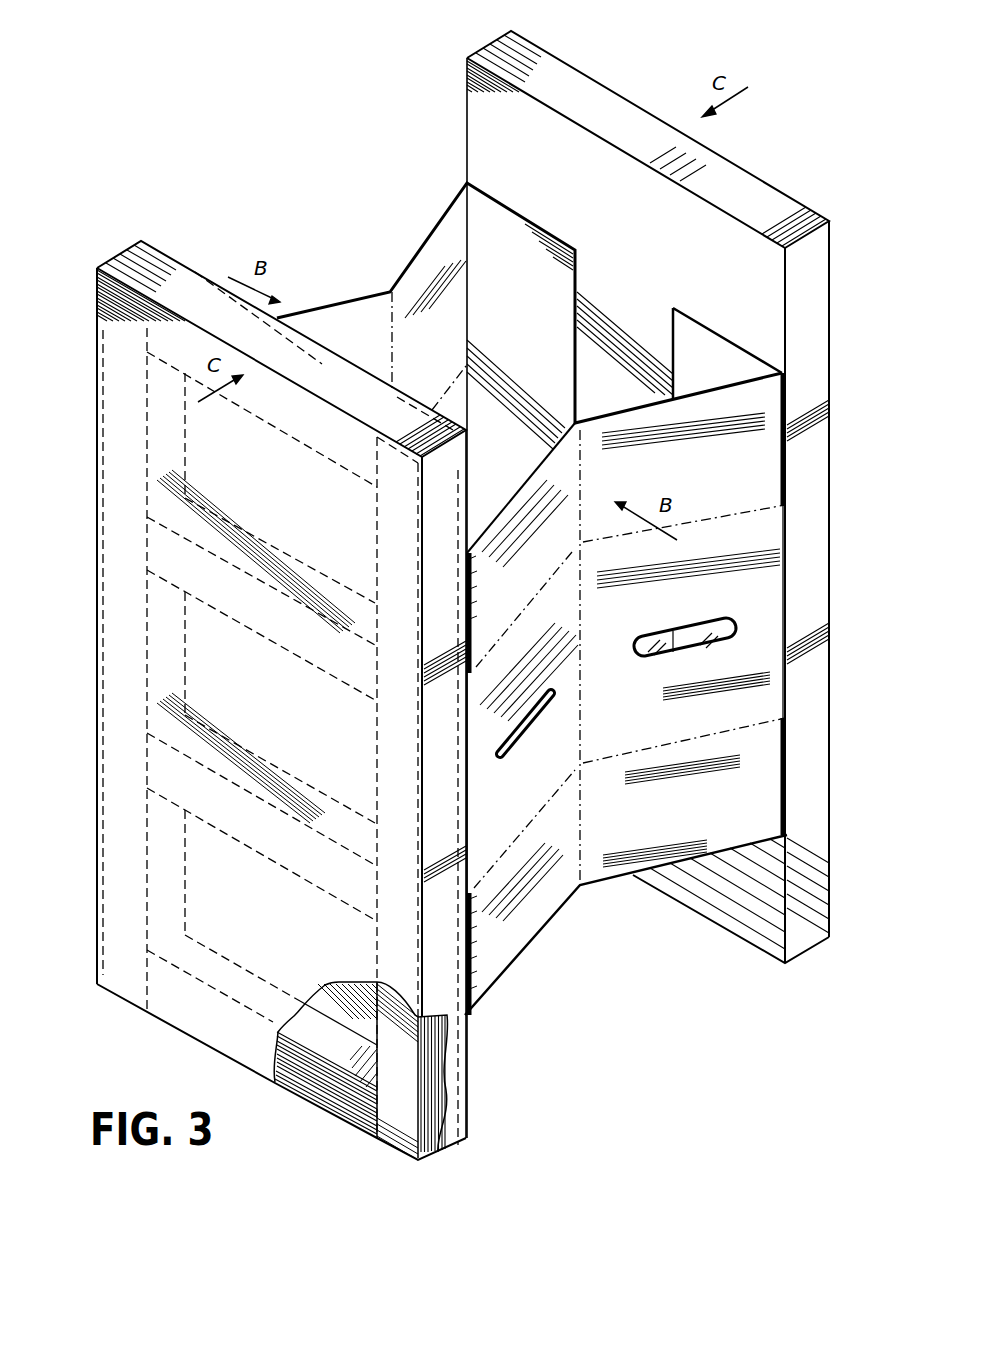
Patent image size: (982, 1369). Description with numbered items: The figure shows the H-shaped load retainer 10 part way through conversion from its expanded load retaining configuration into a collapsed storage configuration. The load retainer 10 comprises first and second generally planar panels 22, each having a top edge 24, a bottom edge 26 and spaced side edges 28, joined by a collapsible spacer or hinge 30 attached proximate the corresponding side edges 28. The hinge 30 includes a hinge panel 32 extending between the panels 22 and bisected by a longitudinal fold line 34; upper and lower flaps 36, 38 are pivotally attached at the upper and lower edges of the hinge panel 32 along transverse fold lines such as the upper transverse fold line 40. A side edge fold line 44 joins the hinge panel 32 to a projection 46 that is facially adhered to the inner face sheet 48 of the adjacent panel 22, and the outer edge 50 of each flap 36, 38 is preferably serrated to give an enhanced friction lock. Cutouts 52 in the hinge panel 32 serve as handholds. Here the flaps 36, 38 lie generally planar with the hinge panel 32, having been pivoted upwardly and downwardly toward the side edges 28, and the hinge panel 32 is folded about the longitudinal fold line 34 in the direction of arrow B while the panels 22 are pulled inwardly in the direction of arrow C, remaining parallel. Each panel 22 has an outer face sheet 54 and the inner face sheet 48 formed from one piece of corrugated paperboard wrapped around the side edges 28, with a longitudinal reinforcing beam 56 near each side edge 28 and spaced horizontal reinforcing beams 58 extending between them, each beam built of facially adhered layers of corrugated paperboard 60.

The load retainer 10 is at (277, 1147).
The panel 22 is at (612, 88).
The top edge 24 is at (463, 244).
The bottom edge 26 is at (207, 1047).
The side edge 28 is at (482, 50).
The collapsible hinge 30 is at (421, 249).
The hinge panel 32 is at (468, 405).
The longitudinal fold line 34 is at (400, 350).
The upper flap 36 is at (365, 296).
The lower flap 38 is at (611, 838).
The upper transverse fold line 40 is at (465, 372).
The side edge fold line 44 is at (467, 387).
The projection 46 is at (604, 336).
The inner face sheet 48 is at (627, 314).
The outer edge 50 is at (467, 180).
The cutout 52 is at (722, 622).
The outer face sheet 54 is at (280, 708).
The longitudinal reinforcing beam 56 is at (97, 913).
The horizontal reinforcing beam 58 is at (286, 553).
The layer of corrugated paperboard 60 is at (338, 1097).